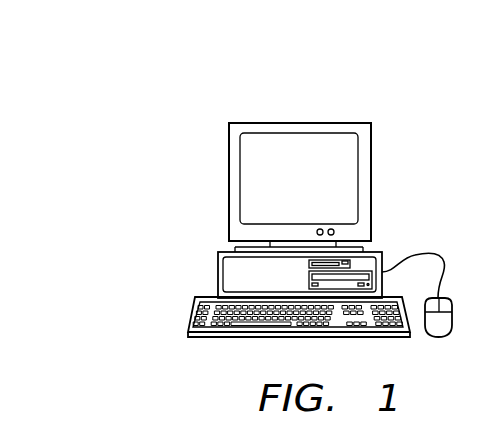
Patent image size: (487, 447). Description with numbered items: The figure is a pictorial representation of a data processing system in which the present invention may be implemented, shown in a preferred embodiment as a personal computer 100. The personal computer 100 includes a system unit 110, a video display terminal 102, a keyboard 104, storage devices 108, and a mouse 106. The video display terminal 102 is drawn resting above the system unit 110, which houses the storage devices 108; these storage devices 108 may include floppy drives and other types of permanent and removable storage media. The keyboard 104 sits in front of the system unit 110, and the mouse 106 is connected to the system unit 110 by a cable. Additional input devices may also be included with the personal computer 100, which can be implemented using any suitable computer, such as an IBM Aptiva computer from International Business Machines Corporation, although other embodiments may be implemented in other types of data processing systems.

The personal computer 100 is at (321, 98).
The video display terminal 102 is at (245, 180).
The keyboard 104 is at (215, 322).
The mouse 106 is at (439, 333).
The storage devices 108 is at (352, 264).
The system unit 110 is at (299, 250).